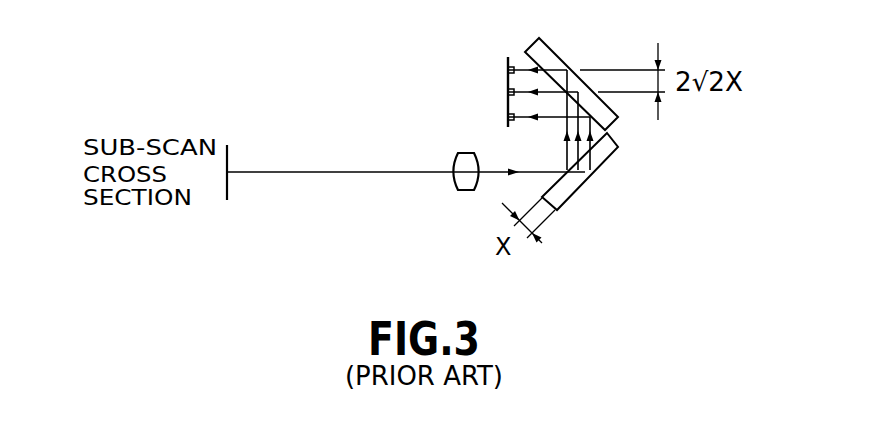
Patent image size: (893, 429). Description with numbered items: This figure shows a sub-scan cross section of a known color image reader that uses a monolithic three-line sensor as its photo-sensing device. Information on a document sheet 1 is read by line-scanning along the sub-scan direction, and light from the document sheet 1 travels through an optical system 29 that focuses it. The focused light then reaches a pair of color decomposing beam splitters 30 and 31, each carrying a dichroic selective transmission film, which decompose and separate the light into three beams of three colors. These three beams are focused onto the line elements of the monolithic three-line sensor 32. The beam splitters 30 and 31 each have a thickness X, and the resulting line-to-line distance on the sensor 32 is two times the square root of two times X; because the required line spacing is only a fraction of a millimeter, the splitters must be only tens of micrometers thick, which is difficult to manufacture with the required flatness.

The document sheet 1 is at (229, 154).
The optical system 29 is at (462, 153).
The color decomposing beam splitter 30 is at (609, 150).
The color decomposing beam splitter 31 is at (618, 118).
The monolithic 3-line sensor 32 is at (507, 80).